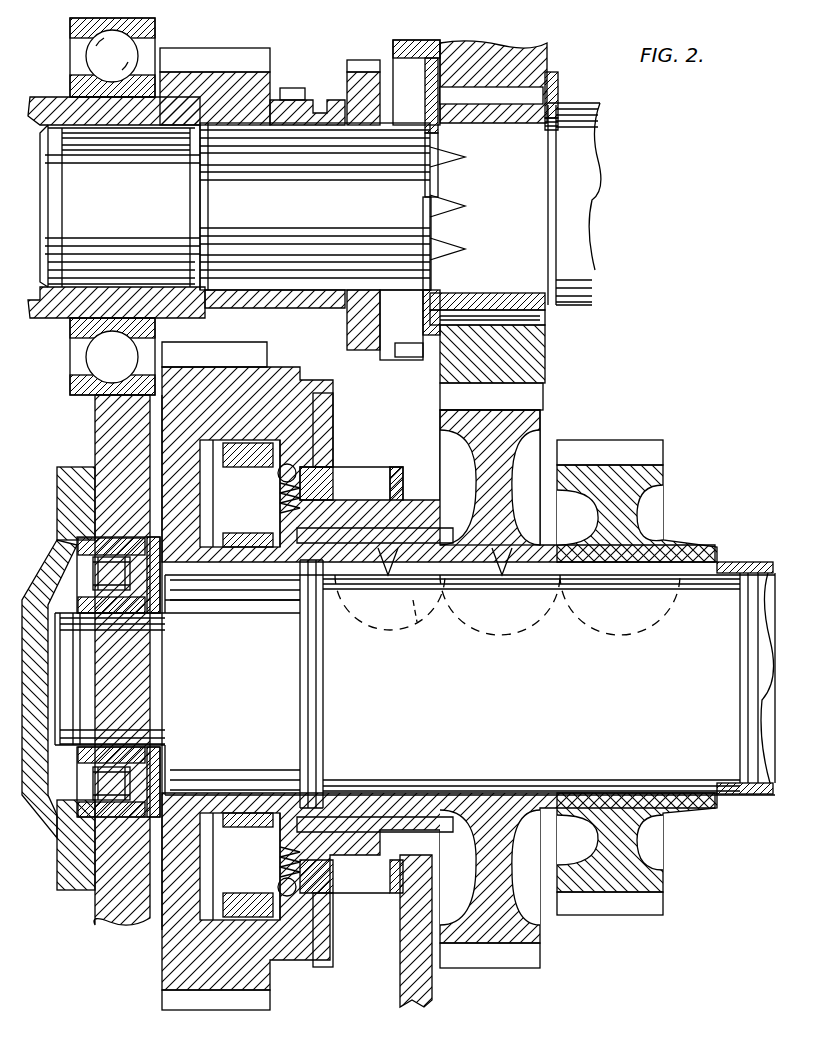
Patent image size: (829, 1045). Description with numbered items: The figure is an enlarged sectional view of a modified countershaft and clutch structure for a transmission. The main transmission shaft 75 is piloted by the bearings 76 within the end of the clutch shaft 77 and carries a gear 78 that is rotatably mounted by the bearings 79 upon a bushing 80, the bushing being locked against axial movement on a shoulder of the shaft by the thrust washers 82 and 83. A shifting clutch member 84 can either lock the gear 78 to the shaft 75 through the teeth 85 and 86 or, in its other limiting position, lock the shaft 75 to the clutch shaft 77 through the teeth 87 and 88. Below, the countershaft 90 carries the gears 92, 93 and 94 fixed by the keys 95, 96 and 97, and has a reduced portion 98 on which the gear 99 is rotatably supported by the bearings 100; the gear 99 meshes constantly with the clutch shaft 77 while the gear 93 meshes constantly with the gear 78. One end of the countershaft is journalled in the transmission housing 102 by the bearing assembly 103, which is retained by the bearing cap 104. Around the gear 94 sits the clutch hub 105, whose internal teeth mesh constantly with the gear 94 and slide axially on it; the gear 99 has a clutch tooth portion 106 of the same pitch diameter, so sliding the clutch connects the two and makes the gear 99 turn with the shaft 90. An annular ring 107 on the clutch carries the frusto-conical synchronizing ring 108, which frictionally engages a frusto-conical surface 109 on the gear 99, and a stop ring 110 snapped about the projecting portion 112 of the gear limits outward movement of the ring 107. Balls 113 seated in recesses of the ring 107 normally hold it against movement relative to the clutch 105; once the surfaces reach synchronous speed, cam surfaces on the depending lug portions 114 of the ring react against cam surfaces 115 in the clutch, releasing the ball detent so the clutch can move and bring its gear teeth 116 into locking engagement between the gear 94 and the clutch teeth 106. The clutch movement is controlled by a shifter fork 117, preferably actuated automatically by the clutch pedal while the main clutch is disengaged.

The main transmission shaft 75 is at (50, 243).
The bearings 76 is at (66, 140).
The clutch shaft 77 is at (63, 107).
The gear 78 is at (540, 350).
The bearings 79 is at (498, 320).
The bushing 80 is at (525, 110).
The thrust washer 82 is at (553, 95).
The thrust washer 83 is at (410, 200).
The shifting clutch member 84 is at (333, 105).
The teeth 85 is at (366, 62).
The teeth 86 is at (410, 60).
The teeth 87 is at (293, 92).
The teeth 88 is at (280, 95).
The countershaft 90 is at (695, 712).
The gear 92 is at (640, 517).
The gear 93 is at (542, 430).
The gear 94 is at (392, 583).
The key 95 is at (627, 590).
The key 96 is at (493, 600).
The key 97 is at (417, 631).
The reduced portion 98 is at (275, 675).
The gear 99 is at (187, 600).
The bearings 100 is at (230, 600).
The transmission housing 102 is at (97, 436).
The bearing assembly 103 is at (83, 587).
The bearing cap 104 is at (63, 491).
The clutch hub 105 is at (360, 505).
The clutch tooth portion 106 is at (290, 792).
The annular ring 107 is at (335, 447).
The frusto-conical synchronizing ring 108 is at (292, 435).
The frusto-conical surface 109 is at (270, 430).
The stop ring 110 is at (322, 440).
The projecting portion 112 is at (318, 430).
The balls 113 is at (305, 456).
The depending lug portions 114 is at (247, 482).
The cam surfaces 115 is at (357, 462).
The gear teeth 116 is at (463, 532).
The shifter fork 117 is at (403, 968).